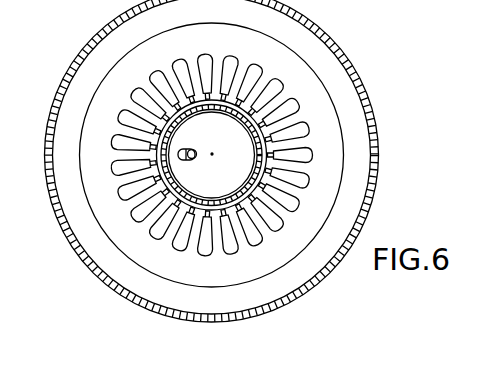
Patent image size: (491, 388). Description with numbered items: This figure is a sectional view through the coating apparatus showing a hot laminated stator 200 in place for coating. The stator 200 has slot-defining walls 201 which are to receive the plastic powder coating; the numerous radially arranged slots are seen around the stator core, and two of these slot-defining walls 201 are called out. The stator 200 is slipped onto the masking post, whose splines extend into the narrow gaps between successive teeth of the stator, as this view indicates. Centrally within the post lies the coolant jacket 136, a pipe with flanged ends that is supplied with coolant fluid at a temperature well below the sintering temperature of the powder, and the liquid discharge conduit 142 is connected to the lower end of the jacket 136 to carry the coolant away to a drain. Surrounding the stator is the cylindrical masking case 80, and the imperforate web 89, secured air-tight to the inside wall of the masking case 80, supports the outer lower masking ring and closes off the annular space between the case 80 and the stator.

The masking case 80 is at (77, 58).
The imperforate web 89 is at (88, 222).
The laminated stator 200 is at (305, 72).
The slot-defining walls 201 is at (293, 153).
The coolant jacket 136 is at (173, 142).
The liquid discharge conduit 142 is at (188, 160).